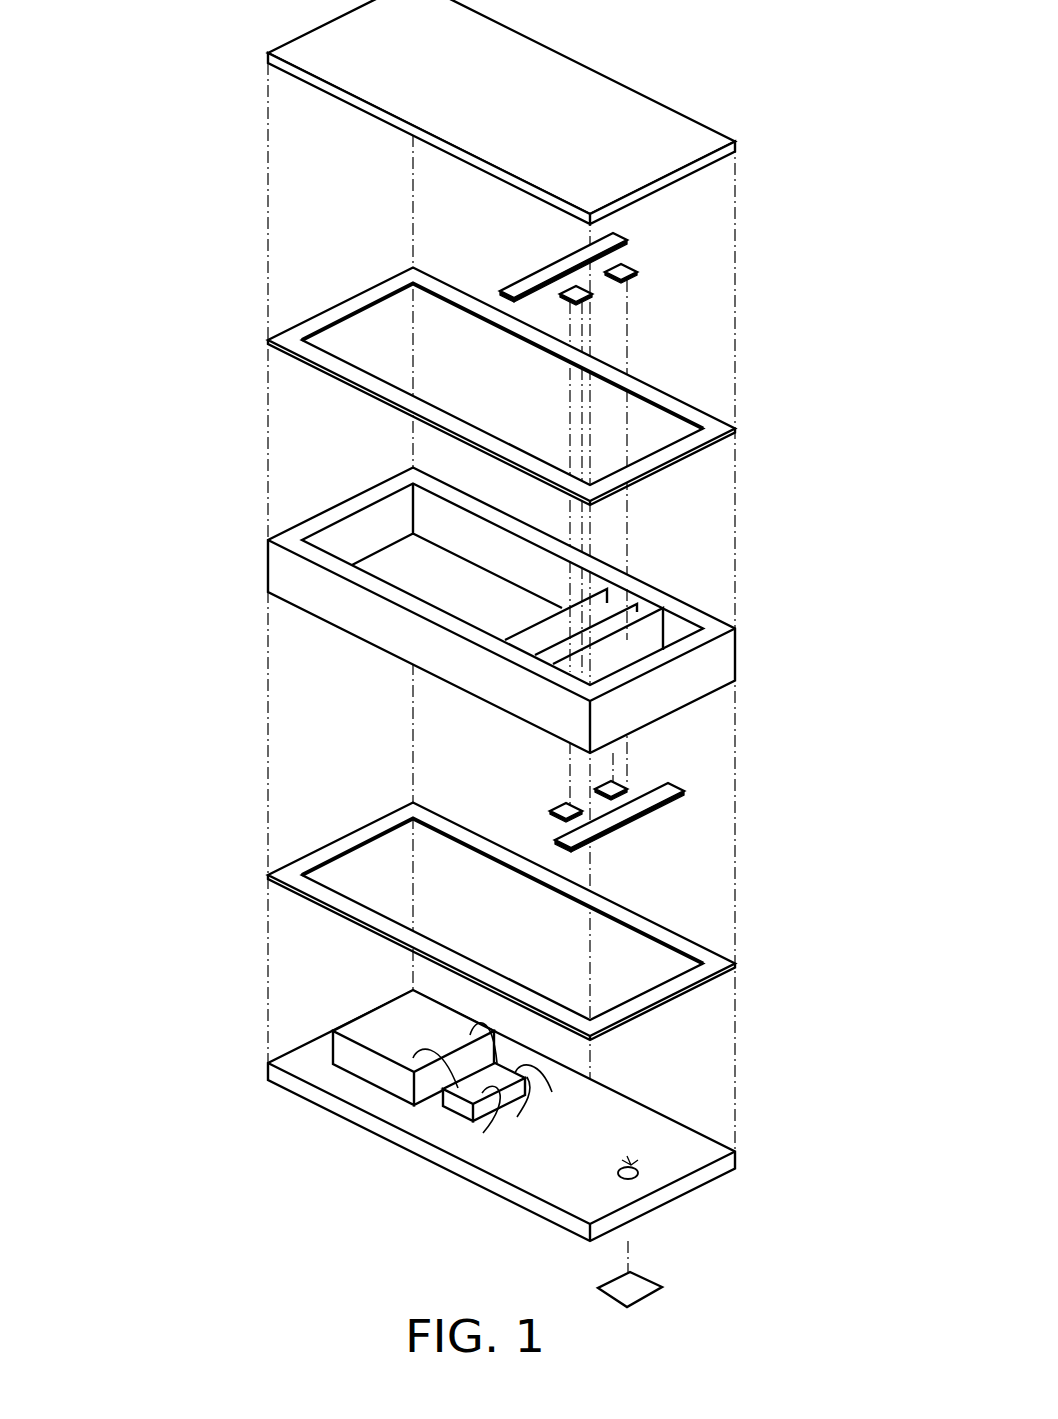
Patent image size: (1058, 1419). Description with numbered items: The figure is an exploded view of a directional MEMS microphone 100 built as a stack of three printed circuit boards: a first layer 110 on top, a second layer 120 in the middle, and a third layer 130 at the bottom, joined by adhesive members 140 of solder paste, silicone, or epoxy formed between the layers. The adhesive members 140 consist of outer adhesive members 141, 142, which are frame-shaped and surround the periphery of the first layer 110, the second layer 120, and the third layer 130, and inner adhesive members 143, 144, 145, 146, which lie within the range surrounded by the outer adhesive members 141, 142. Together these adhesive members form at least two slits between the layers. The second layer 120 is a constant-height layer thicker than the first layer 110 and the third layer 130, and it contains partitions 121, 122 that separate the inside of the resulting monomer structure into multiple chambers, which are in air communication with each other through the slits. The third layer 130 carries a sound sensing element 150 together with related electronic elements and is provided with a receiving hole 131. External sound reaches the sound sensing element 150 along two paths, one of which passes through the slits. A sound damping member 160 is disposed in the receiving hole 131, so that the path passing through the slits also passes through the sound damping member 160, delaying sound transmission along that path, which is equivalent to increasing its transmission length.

The directional MEMS microphone 100 is at (906, 43).
The first layer 110 is at (600, 92).
The second layer 120 is at (455, 611).
The partition 121 is at (650, 628).
The partition 122 is at (603, 597).
The third layer 130 is at (486, 1101).
The receiving hole 131 is at (632, 1163).
The adhesive members 140 is at (118, 5).
The outer adhesive member 141 is at (693, 415).
The outer adhesive member 142 is at (703, 953).
The inner adhesive member 143 is at (555, 268).
The inner adhesive member 144 is at (593, 298).
The inner adhesive member 145 is at (562, 807).
The inner adhesive member 146 is at (658, 790).
The sound sensing element 150 is at (388, 1018).
The sound damping member 160 is at (650, 1294).